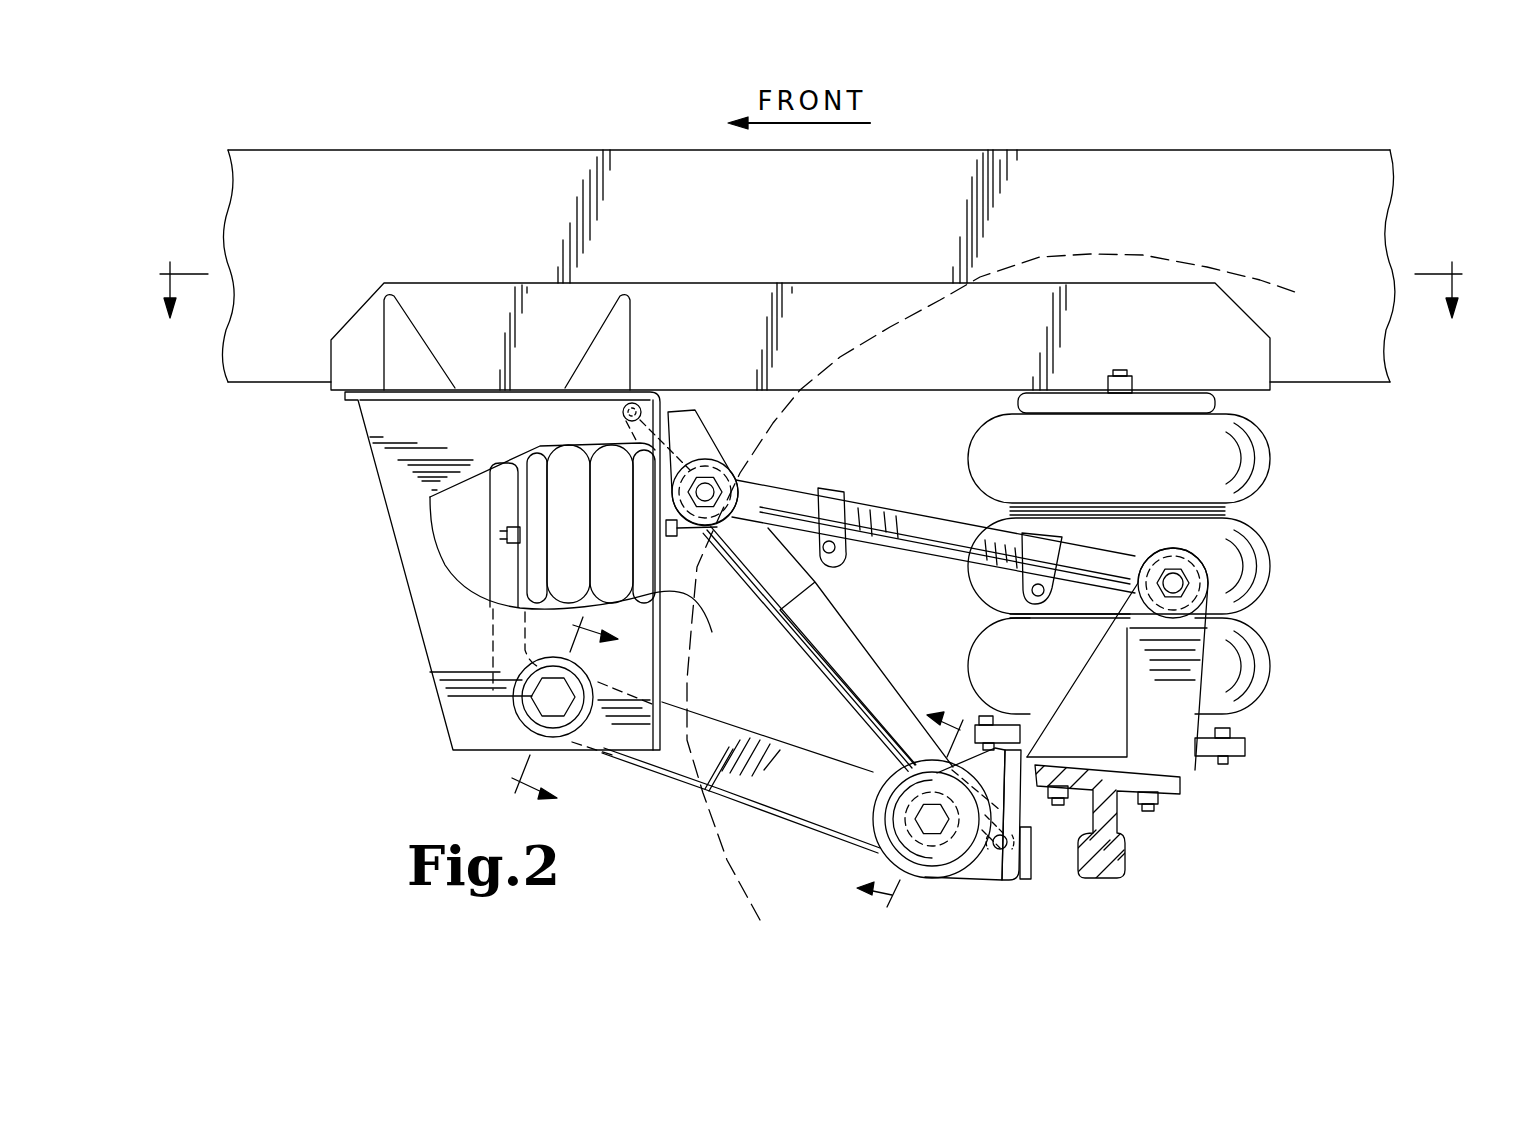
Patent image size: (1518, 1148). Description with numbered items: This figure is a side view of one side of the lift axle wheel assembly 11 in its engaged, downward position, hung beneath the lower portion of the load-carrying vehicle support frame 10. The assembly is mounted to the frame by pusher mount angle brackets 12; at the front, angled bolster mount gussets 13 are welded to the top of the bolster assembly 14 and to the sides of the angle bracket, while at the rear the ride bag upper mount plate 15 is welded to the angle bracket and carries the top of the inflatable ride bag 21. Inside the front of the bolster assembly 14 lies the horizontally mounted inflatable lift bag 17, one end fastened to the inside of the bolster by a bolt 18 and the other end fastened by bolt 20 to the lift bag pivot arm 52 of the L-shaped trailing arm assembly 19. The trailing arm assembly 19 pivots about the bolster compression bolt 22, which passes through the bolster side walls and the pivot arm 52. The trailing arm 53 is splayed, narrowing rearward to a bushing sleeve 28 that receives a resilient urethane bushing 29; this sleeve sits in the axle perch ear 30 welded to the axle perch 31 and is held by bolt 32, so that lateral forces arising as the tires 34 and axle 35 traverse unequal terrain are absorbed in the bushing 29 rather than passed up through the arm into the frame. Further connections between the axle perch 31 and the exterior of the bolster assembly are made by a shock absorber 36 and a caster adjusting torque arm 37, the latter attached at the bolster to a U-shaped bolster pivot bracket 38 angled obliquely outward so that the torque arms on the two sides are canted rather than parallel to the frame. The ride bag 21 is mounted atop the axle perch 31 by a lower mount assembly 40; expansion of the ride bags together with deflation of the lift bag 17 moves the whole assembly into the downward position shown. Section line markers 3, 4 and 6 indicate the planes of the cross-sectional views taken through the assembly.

The section line 3- 3 is at (806, 287).
The section line 4- 4 is at (552, 703).
The section line 6- 6 is at (912, 806).
The vehicle support frame 10 is at (452, 150).
The lift axle wheel assembly 11 is at (290, 593).
The pusher mount angle bracket 12 is at (331, 364).
The angled bolster mount gusset 13 is at (440, 367).
The bolster assembly 14 is at (420, 557).
The ride bag upper mount plate 15 is at (1220, 392).
The inflatable lift bag 17 is at (580, 554).
The bolt 18 is at (680, 538).
The trailing arm assembly 19 is at (686, 796).
The bolt 20 is at (515, 527).
The ride bag 21 is at (1268, 575).
The bolster compression bolt 22 is at (535, 708).
The bushing sleeve 28 is at (880, 822).
The resilient urethane bushing 29 is at (893, 777).
The axle perch ear 30 is at (980, 878).
The axle perch 31 is at (1022, 808).
The bolt 32 is at (935, 838).
The tire 34 is at (1147, 257).
The axle 35 is at (1123, 823).
The shock absorber 36 is at (868, 650).
The caster adjusting torque arm 37 is at (1182, 548).
The U-shaped bolster pivot bracket 38 is at (730, 450).
The lower mount assembly 40 is at (1240, 757).
The lift bag pivot arm 52 is at (493, 580).
The trailing arm 53 is at (667, 780).